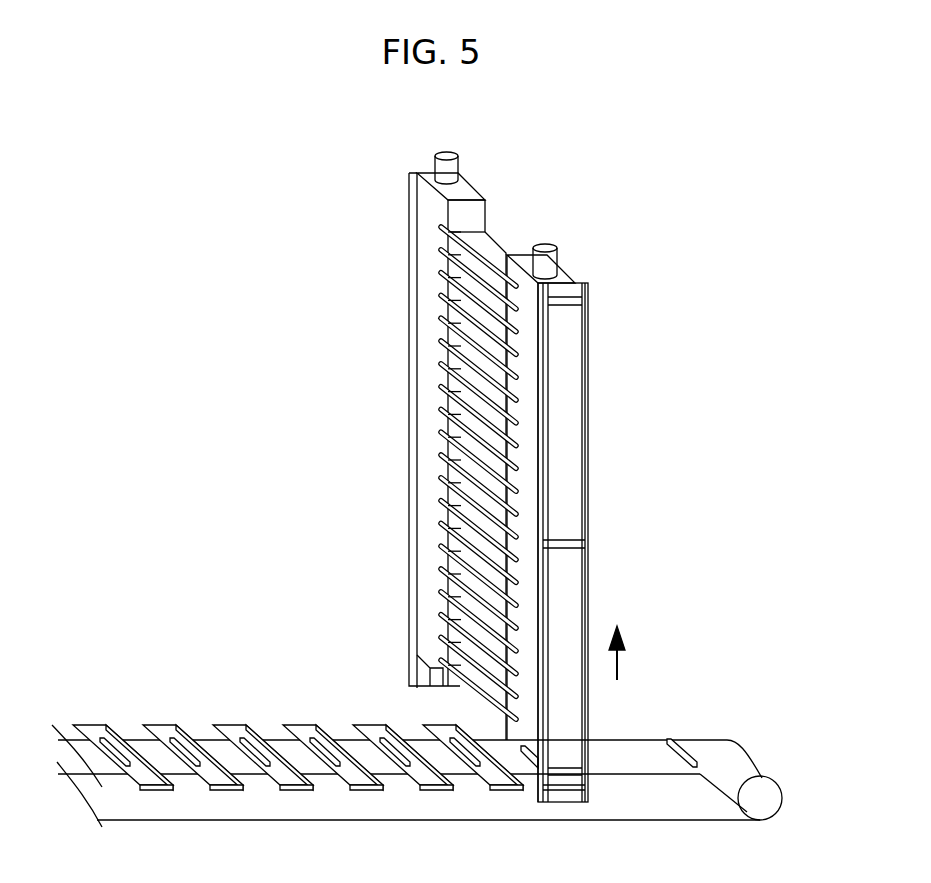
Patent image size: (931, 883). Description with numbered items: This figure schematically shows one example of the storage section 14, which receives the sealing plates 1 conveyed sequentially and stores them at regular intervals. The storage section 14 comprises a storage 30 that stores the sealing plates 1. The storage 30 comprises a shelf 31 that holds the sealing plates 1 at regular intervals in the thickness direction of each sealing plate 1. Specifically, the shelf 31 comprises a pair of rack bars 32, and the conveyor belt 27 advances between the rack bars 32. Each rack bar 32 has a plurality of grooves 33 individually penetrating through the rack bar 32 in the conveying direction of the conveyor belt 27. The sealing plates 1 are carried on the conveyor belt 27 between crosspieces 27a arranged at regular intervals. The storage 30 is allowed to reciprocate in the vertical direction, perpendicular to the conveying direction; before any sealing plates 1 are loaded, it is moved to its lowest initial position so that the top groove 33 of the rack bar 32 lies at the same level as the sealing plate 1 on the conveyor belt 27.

The sealing plate 1 is at (105, 723).
The storage section 14 is at (451, 474).
The conveyor belt 27 is at (748, 755).
The crosspiece 27a is at (676, 742).
The storage 30 is at (647, 380).
The shelf 31 is at (517, 230).
The rack bar 32 is at (426, 210).
The groove 33 is at (484, 242).